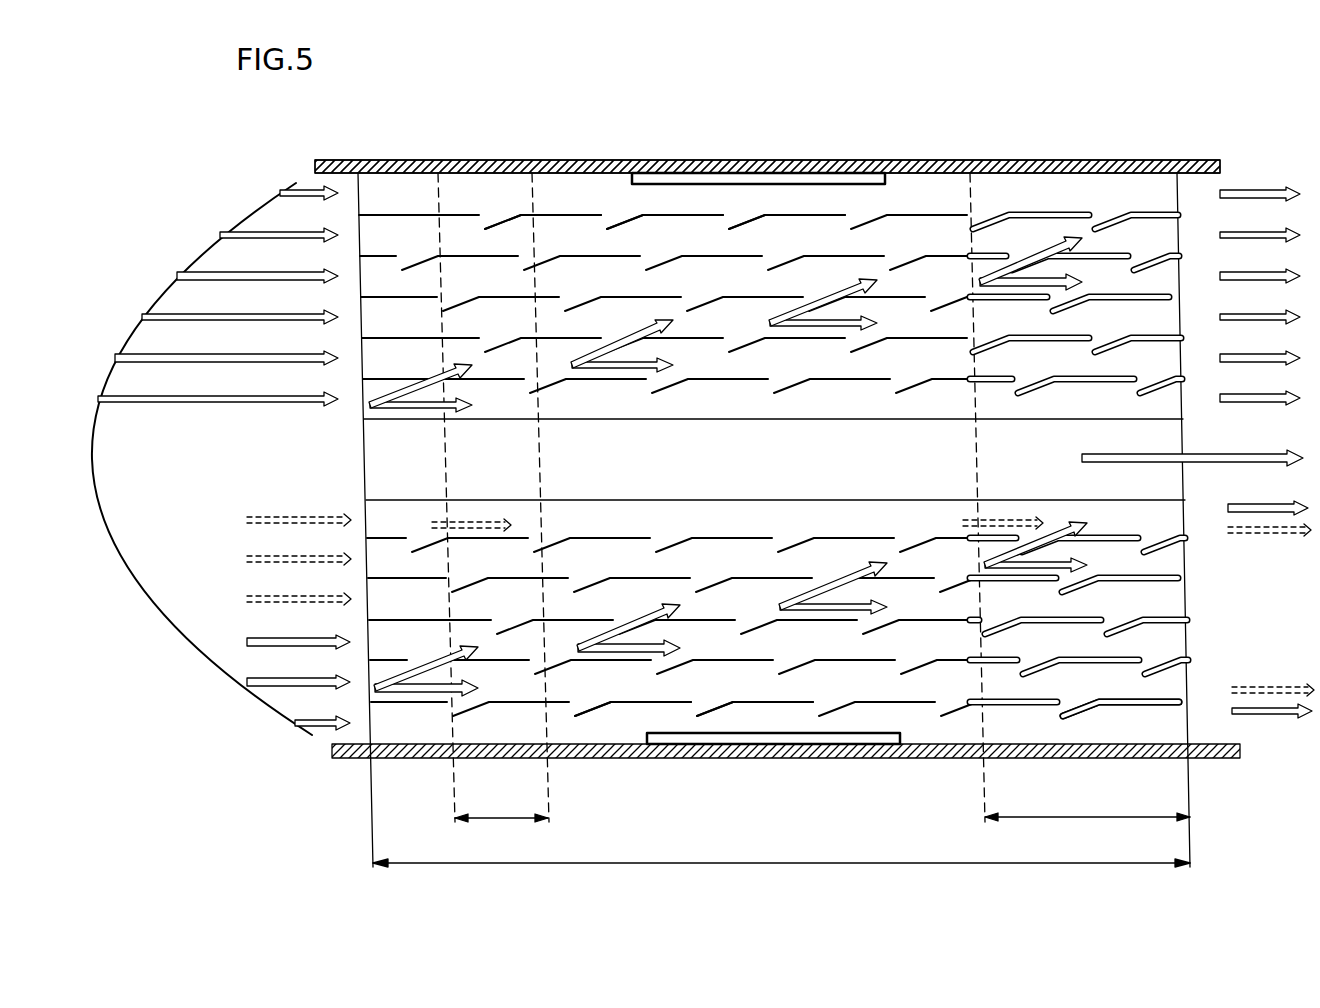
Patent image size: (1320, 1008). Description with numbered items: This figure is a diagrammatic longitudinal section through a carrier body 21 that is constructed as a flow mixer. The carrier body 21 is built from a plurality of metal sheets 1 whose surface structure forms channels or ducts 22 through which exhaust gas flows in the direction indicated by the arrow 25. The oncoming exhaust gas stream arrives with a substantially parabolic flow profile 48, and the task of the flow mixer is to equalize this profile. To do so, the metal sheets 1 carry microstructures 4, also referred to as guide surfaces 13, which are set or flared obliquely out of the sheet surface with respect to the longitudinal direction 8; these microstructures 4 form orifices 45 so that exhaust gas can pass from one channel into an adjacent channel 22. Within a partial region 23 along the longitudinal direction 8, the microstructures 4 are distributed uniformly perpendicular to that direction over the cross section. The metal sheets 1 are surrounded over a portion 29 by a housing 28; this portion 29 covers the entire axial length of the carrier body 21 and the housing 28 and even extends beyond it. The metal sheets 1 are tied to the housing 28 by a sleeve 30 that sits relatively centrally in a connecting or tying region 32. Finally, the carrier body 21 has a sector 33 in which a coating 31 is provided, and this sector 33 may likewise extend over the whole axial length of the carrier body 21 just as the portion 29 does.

The metal sheet 1 is at (930, 213).
The microstructure 4 is at (745, 217).
The longitudinal direction 8 is at (1205, 456).
The guide surface 13 is at (718, 710).
The carrier body 21 is at (1145, 141).
The channels or ducts 22 is at (1173, 603).
The partial region 23 is at (505, 817).
The arrow 25 is at (615, 382).
The housing 28 is at (1017, 167).
The portion 29 is at (784, 862).
The sleeve 30 is at (763, 167).
The coating 31 is at (1123, 707).
The connecting or tying region 32 is at (847, 758).
The sector 33 is at (1090, 817).
The orifice 45 is at (487, 218).
The flow profile 48 is at (202, 658).